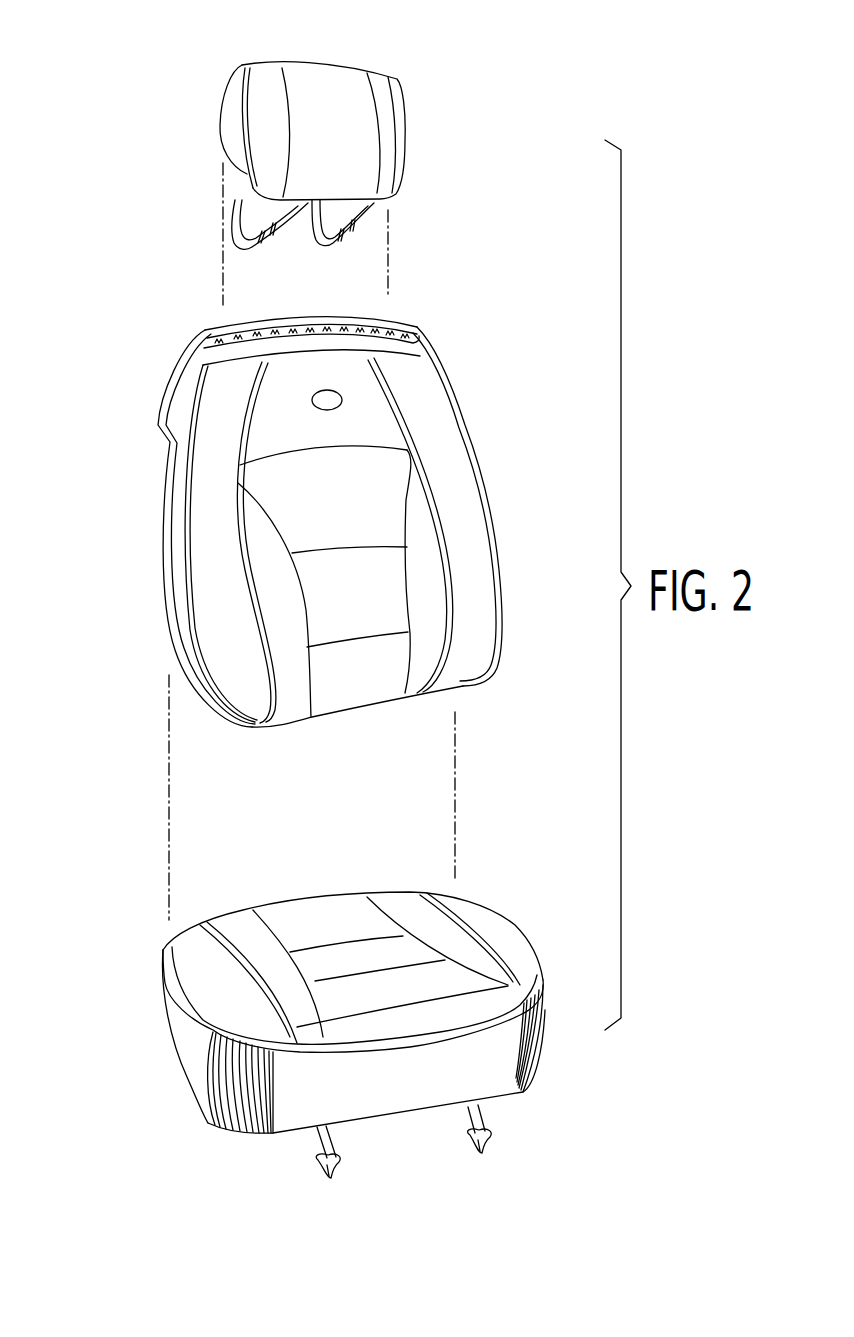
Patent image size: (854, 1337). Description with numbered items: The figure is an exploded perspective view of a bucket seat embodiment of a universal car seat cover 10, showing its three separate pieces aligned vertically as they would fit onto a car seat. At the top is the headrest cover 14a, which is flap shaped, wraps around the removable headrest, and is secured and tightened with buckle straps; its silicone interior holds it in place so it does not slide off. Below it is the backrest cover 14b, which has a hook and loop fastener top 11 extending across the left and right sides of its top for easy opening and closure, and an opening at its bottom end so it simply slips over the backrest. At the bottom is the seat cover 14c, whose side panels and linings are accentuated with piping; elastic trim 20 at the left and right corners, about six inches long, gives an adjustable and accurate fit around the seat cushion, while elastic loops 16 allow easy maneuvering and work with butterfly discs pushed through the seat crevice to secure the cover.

The universal car seat cover 10 is at (148, 116).
The hook and loop fastener top 11 is at (378, 335).
The headrest cover 14a is at (327, 92).
The backrest cover 14b is at (423, 403).
The seat cover 14c is at (445, 933).
The elastic loops 16 is at (467, 1120).
The elastic trim 20 is at (230, 1088).